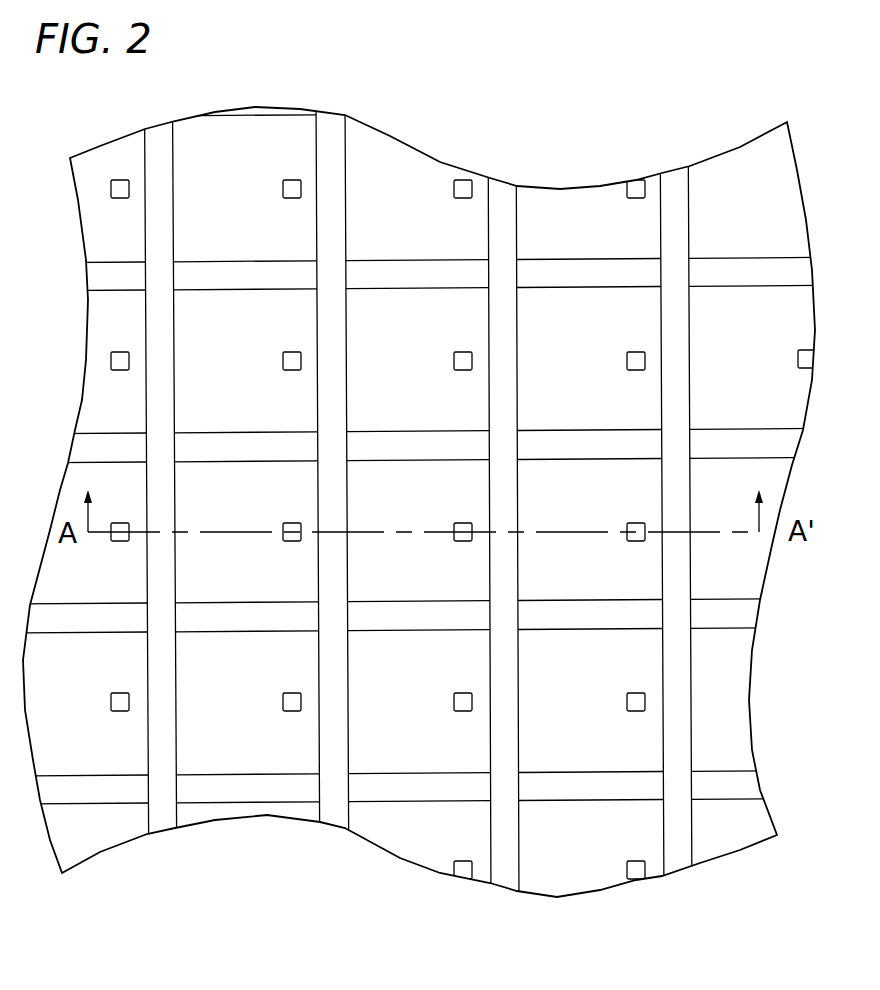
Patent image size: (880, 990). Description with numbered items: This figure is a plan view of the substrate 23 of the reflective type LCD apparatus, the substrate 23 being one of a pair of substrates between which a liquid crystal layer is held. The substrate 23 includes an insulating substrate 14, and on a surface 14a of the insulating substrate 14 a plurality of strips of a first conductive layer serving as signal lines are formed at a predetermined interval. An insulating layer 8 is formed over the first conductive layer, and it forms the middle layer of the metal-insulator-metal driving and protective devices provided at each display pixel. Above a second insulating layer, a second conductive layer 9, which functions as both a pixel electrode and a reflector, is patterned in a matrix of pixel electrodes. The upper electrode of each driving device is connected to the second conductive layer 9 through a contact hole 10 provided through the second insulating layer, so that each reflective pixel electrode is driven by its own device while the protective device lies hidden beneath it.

The insulating layer 8 is at (737, 617).
The second conductive layer 9 is at (271, 135).
The contact hole 10 is at (637, 882).
The insulating substrate 14 is at (80, 400).
The surface of the insulating substrate 14a is at (331, 134).
The substrate 23 is at (597, 126).